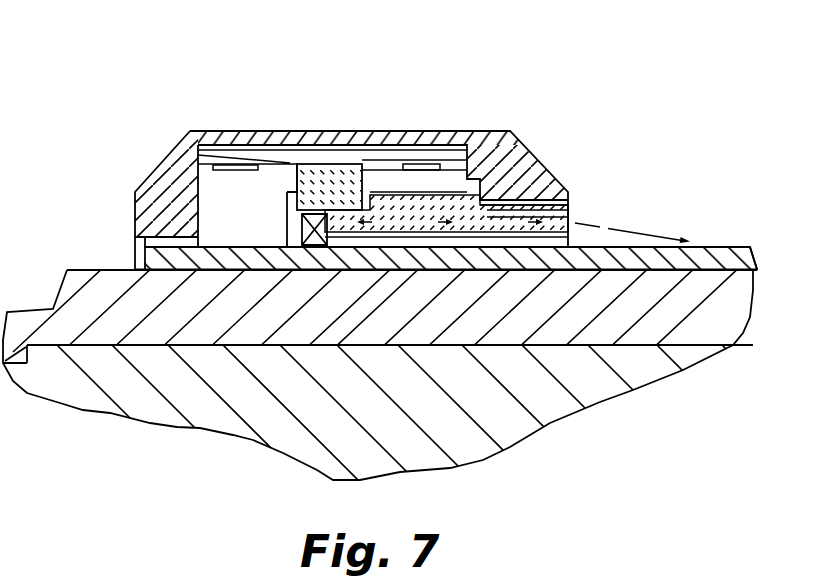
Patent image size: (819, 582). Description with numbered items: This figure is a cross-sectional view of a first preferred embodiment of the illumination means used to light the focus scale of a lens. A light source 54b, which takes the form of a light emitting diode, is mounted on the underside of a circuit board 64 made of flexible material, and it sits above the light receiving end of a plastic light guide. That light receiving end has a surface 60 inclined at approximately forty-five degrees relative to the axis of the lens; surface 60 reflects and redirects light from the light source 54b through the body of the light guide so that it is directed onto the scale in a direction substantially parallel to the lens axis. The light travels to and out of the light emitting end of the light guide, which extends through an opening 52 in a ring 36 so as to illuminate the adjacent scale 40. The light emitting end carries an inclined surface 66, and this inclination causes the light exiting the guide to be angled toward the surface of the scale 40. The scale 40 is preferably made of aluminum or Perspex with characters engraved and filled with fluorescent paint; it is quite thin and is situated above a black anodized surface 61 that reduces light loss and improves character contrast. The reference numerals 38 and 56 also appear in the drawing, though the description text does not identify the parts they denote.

The ring 36 is at (260, 131).
The body 38 is at (662, 205).
The scale 40 is at (716, 247).
The opening 52 is at (574, 222).
The light source 54b is at (328, 209).
The plate 56 is at (235, 131).
The surface 60 is at (320, 233).
The black anodized surface 61 is at (708, 268).
The circuit board 64 is at (423, 164).
The surface 66 is at (576, 222).